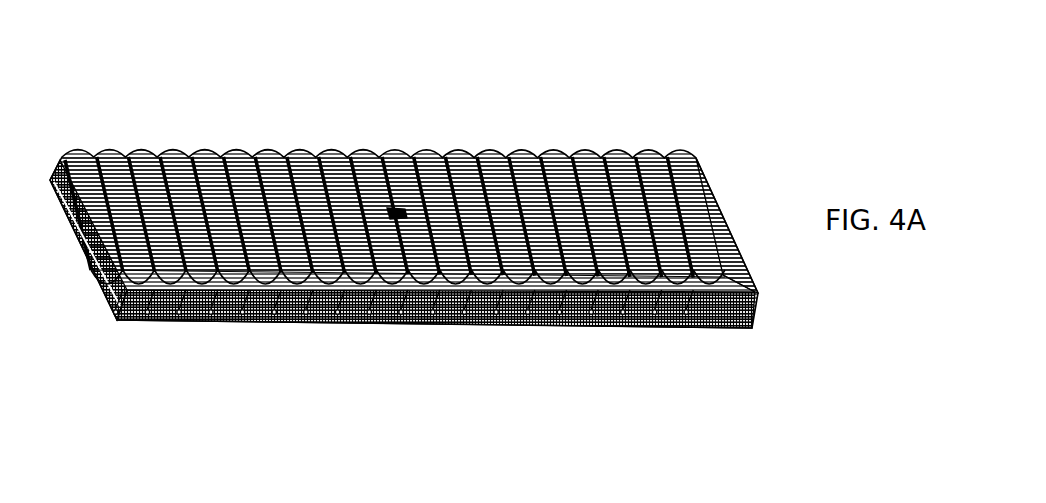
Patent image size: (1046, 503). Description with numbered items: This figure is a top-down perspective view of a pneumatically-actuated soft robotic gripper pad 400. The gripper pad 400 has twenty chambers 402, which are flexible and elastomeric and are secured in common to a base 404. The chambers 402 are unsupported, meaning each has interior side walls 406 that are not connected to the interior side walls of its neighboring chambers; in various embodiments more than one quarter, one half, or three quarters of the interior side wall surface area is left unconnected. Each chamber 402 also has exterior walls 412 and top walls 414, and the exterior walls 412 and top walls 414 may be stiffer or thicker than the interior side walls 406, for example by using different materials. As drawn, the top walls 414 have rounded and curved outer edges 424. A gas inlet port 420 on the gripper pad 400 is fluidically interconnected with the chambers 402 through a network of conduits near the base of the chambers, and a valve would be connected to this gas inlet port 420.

The soft robotic gripper pad 400 is at (123, 122).
The chambers 402 is at (545, 195).
The base 404 is at (108, 300).
The interior side walls 406 is at (533, 312).
The exterior walls 412 is at (720, 222).
The top walls 414 is at (490, 282).
The gas inlet port 420 is at (396, 212).
The rounded and curved outer edges 424 is at (240, 150).